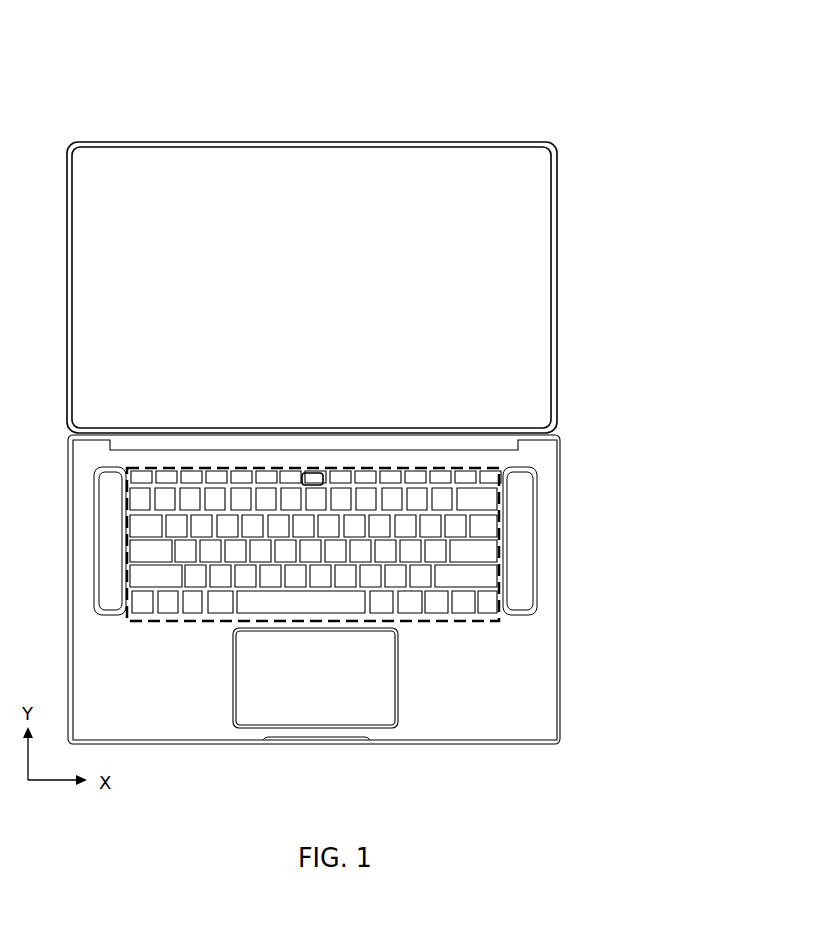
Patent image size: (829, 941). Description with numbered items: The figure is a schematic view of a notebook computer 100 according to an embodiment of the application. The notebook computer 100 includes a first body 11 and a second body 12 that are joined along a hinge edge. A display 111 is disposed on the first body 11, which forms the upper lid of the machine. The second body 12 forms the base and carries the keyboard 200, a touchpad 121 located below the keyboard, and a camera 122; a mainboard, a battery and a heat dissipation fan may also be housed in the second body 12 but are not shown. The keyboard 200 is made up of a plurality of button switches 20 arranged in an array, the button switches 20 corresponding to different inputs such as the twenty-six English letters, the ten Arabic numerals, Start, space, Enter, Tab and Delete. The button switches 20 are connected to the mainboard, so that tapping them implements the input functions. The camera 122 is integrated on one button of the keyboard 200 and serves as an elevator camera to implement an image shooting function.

The notebook computer 100 is at (153, 67).
The first body 11 is at (557, 218).
The display 111 is at (551, 290).
The second body 12 is at (557, 620).
The touchpad 121 is at (325, 707).
The camera 122 is at (313, 472).
The button switch 20 is at (410, 600).
The keyboard 200 is at (449, 621).